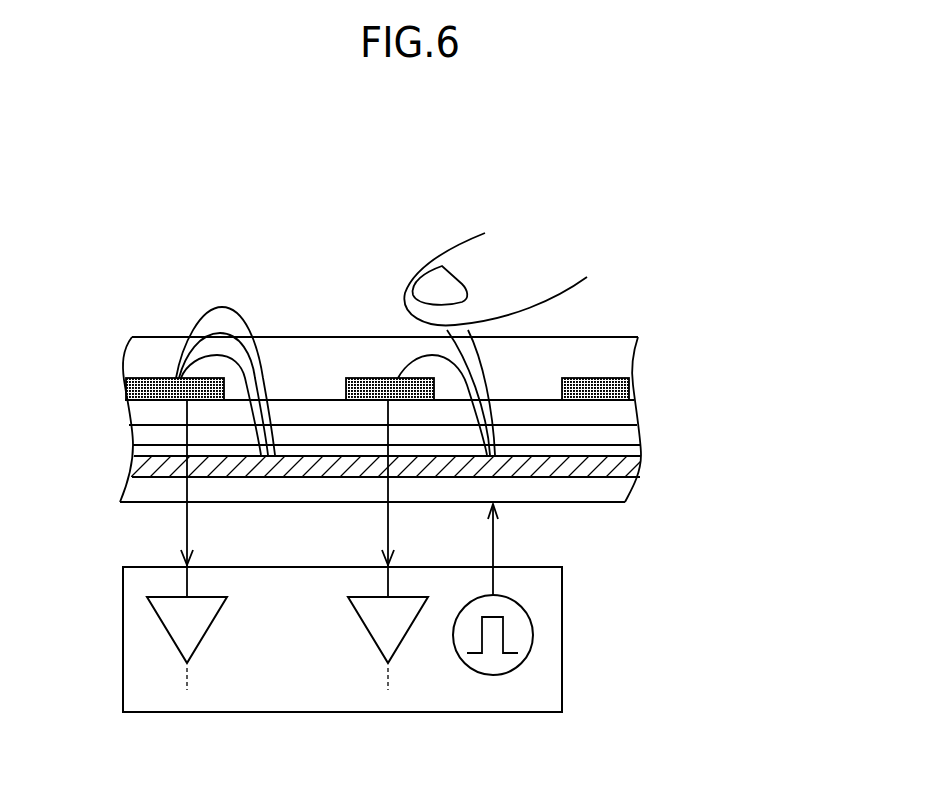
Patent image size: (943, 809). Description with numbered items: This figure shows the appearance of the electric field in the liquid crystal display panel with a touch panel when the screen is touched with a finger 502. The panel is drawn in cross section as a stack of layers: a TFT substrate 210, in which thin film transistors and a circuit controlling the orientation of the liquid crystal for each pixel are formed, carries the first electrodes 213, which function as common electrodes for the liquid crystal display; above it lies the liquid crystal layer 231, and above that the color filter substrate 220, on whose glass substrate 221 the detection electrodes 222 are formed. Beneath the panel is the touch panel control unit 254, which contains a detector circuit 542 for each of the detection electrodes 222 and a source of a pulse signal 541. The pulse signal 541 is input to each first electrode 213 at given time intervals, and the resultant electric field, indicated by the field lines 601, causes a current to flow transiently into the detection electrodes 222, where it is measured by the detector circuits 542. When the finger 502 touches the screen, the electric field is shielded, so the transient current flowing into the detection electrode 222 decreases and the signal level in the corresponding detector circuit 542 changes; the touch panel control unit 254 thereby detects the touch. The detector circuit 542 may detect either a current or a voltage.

The color filter substrate 220 is at (753, 337).
The TFT substrate 210 is at (753, 443).
The detection electrodes 222 is at (638, 389).
The glass substrate 221 is at (638, 419).
The liquid crystal layer 231 is at (143, 434).
The first electrodes 213 is at (627, 467).
The electric field lines 601 is at (478, 378).
The finger 502 is at (463, 258).
The touch panel control unit 254 is at (562, 597).
The detector circuit 542 is at (362, 626).
The pulse signal 541 is at (533, 640).